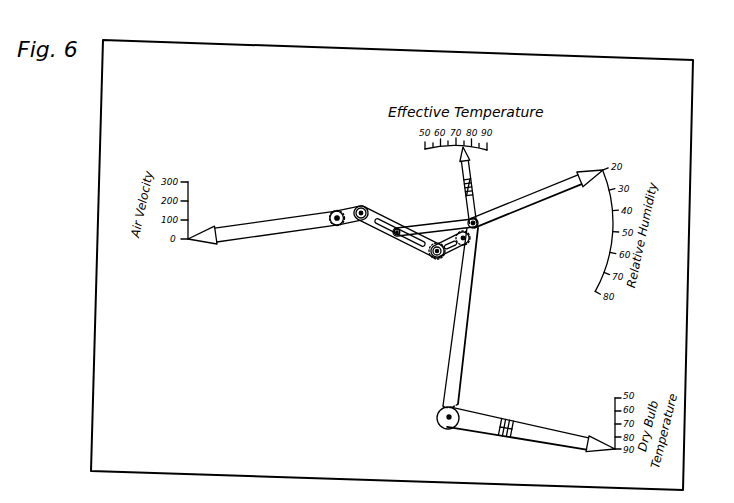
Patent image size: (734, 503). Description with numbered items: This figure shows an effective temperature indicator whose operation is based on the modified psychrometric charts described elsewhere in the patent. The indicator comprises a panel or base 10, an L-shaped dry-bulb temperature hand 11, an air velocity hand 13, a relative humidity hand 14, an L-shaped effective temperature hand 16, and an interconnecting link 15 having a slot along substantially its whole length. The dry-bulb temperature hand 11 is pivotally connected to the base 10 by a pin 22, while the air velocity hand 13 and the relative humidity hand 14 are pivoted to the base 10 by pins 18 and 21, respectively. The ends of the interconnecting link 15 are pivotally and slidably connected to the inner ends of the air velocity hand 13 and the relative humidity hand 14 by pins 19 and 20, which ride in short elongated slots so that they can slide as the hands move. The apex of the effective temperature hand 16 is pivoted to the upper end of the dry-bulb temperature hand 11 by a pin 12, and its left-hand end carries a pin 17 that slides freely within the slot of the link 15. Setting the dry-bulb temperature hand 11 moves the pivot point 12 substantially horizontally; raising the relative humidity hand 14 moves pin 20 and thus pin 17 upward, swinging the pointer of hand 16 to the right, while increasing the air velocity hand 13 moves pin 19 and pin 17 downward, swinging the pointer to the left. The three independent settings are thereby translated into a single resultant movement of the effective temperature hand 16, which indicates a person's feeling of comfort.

The panel or base 10 is at (279, 339).
The L-shaped dry-bulb temperature hand 11 is at (466, 316).
The pin 12 is at (479, 218).
The air velocity hand 13 is at (258, 229).
The relative humidity hand 14 is at (531, 201).
The interconnecting link 15 is at (374, 212).
The L-shaped effective temperature hand 16 is at (472, 176).
The pin 17 is at (405, 228).
The pin 18 is at (337, 228).
The pin 19 is at (361, 223).
The pin 20 is at (436, 259).
The pin 21 is at (462, 247).
The pin 22 is at (457, 414).